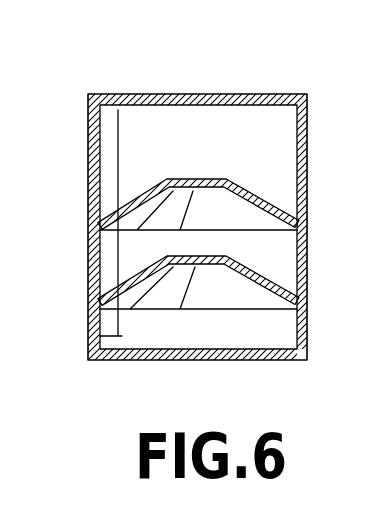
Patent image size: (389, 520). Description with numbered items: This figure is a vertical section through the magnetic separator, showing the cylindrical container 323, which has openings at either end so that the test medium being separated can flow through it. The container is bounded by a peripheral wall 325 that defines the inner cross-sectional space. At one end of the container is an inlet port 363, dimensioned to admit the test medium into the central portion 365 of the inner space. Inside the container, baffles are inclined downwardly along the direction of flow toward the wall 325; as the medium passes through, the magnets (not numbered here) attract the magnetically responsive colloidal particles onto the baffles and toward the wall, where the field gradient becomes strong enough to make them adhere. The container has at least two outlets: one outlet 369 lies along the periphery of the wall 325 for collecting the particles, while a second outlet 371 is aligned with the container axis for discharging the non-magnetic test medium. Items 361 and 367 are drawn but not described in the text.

The cylindrical container 323 is at (89, 131).
The peripheral wall 325 is at (297, 128).
The inner panel 361 is at (100, 334).
The inlet port 363 is at (207, 96).
The central portion 365 is at (224, 180).
The reflector side portion / shelf 367 is at (249, 204).
The outlet 369 is at (173, 389).
The second outlet 371 is at (204, 358).